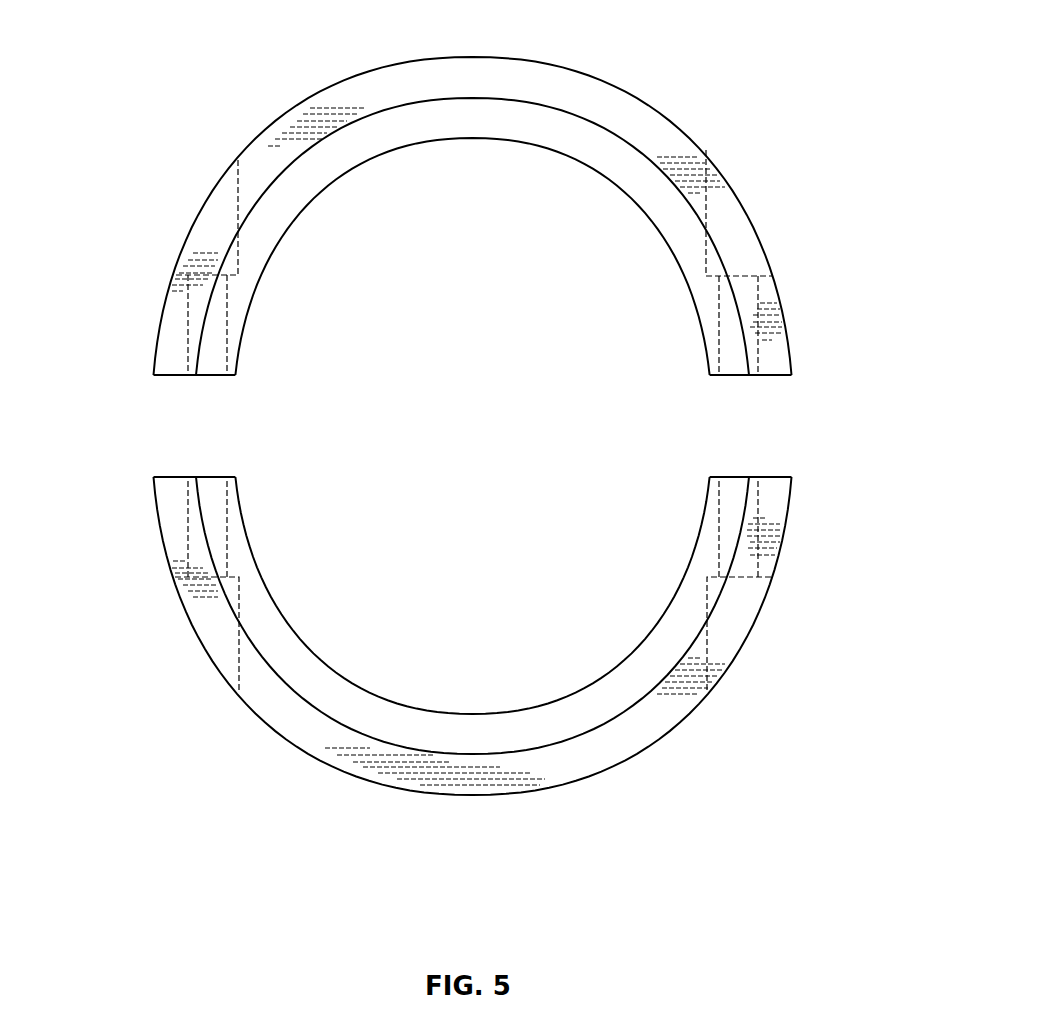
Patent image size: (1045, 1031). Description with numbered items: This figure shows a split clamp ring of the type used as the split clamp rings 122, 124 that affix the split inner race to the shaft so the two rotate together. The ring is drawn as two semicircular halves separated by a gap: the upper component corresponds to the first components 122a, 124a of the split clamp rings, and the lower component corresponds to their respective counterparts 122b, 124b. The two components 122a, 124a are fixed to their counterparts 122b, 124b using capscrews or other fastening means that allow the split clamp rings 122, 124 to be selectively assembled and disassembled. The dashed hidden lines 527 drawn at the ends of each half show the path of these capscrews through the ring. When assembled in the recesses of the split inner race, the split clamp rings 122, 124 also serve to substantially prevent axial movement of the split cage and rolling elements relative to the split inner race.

The split clamp ring 122 is at (486, 432).
The split clamp ring 124 is at (486, 432).
The split clamp ring component 122a is at (473, 193).
The split clamp ring component 124a is at (300, 105).
The split clamp ring counterpart component 122b is at (473, 665).
The split clamp ring counterpart component 124b is at (300, 740).
The hidden lines 527 is at (187, 545).